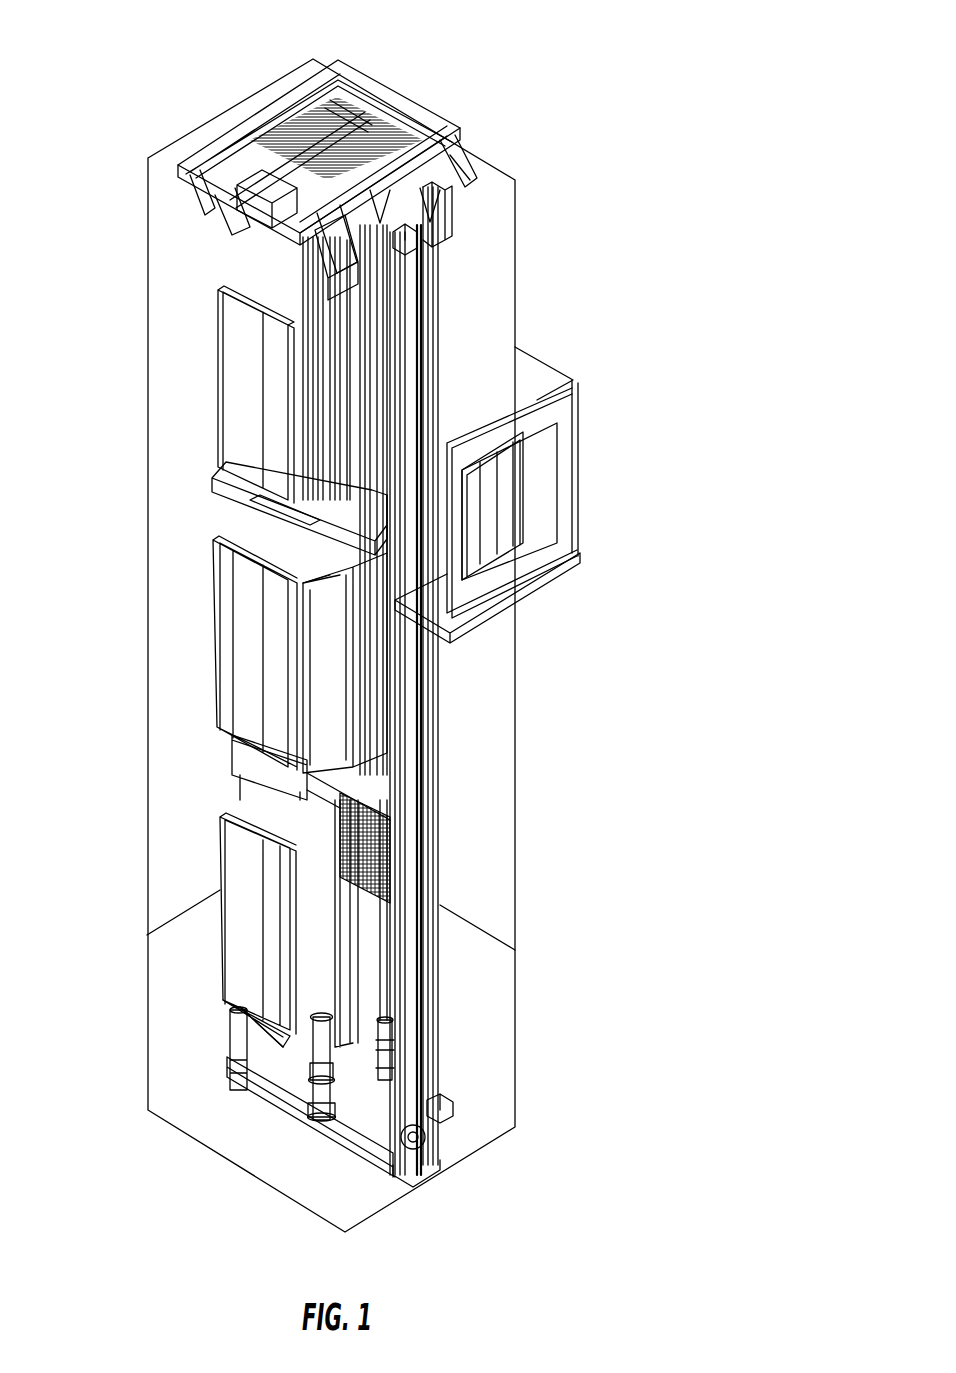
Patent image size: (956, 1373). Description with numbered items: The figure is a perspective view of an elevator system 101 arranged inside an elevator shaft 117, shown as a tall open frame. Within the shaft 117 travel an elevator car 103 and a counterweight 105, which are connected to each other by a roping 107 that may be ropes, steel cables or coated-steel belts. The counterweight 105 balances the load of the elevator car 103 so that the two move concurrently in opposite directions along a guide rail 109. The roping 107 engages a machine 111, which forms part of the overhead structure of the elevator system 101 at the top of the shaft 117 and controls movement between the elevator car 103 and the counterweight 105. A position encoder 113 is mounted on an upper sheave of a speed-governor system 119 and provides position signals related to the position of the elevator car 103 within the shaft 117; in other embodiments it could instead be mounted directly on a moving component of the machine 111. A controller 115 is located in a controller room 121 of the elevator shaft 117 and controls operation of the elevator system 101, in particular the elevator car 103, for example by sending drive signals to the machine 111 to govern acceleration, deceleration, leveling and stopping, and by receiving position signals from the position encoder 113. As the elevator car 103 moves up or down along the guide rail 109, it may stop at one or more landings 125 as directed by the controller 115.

The elevator system 101 is at (545, 112).
The elevator car 103 is at (333, 692).
The counterweight 105 is at (385, 867).
The roping 107 is at (352, 390).
The guide rail 109 is at (413, 787).
The machine 111 is at (252, 150).
The position encoder 113 is at (440, 237).
The controller 115 is at (523, 497).
The elevator shaft 117 is at (192, 781).
The speed-governor system 119 is at (445, 266).
The controller room 121 is at (586, 374).
The landings 125 is at (217, 375).